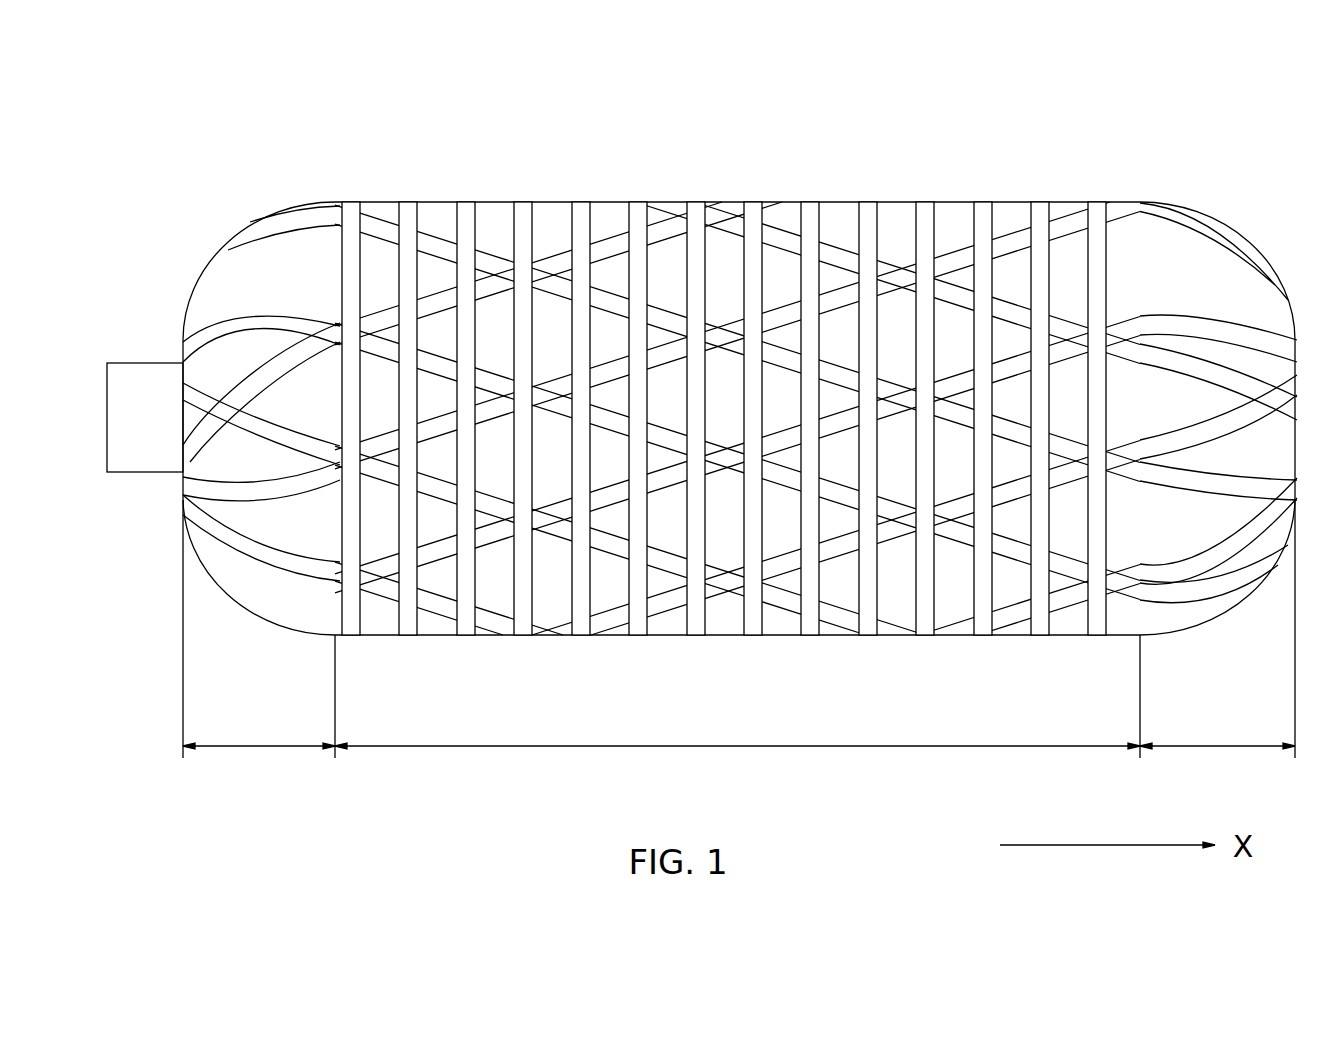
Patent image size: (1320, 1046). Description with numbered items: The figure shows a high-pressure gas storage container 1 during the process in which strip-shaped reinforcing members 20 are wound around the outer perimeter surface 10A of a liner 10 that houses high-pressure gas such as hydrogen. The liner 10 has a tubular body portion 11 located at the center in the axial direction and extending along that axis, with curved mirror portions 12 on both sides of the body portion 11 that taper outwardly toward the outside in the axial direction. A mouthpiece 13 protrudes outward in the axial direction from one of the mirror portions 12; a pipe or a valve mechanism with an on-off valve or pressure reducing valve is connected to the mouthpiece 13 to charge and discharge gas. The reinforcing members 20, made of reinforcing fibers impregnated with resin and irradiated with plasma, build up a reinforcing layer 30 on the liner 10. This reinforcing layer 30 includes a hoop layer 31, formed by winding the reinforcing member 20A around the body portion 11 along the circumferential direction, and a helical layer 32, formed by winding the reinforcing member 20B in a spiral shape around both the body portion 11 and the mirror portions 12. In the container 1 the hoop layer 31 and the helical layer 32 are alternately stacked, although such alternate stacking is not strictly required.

The high-pressure gas storage container 1 is at (124, 84).
The liner 10 is at (548, 215).
The outer perimeter surface 10A is at (437, 205).
The body portion 11 is at (737, 696).
The mirror portions 12 is at (739, 629).
The mouthpiece 13 is at (133, 377).
The reinforcing members 20 is at (692, 113).
The reinforcing member 20A is at (808, 212).
The reinforcing member 20B is at (722, 212).
The reinforcing layer 30 is at (958, 113).
The hoop layer 31 is at (981, 212).
The helical layer 32 is at (1069, 212).